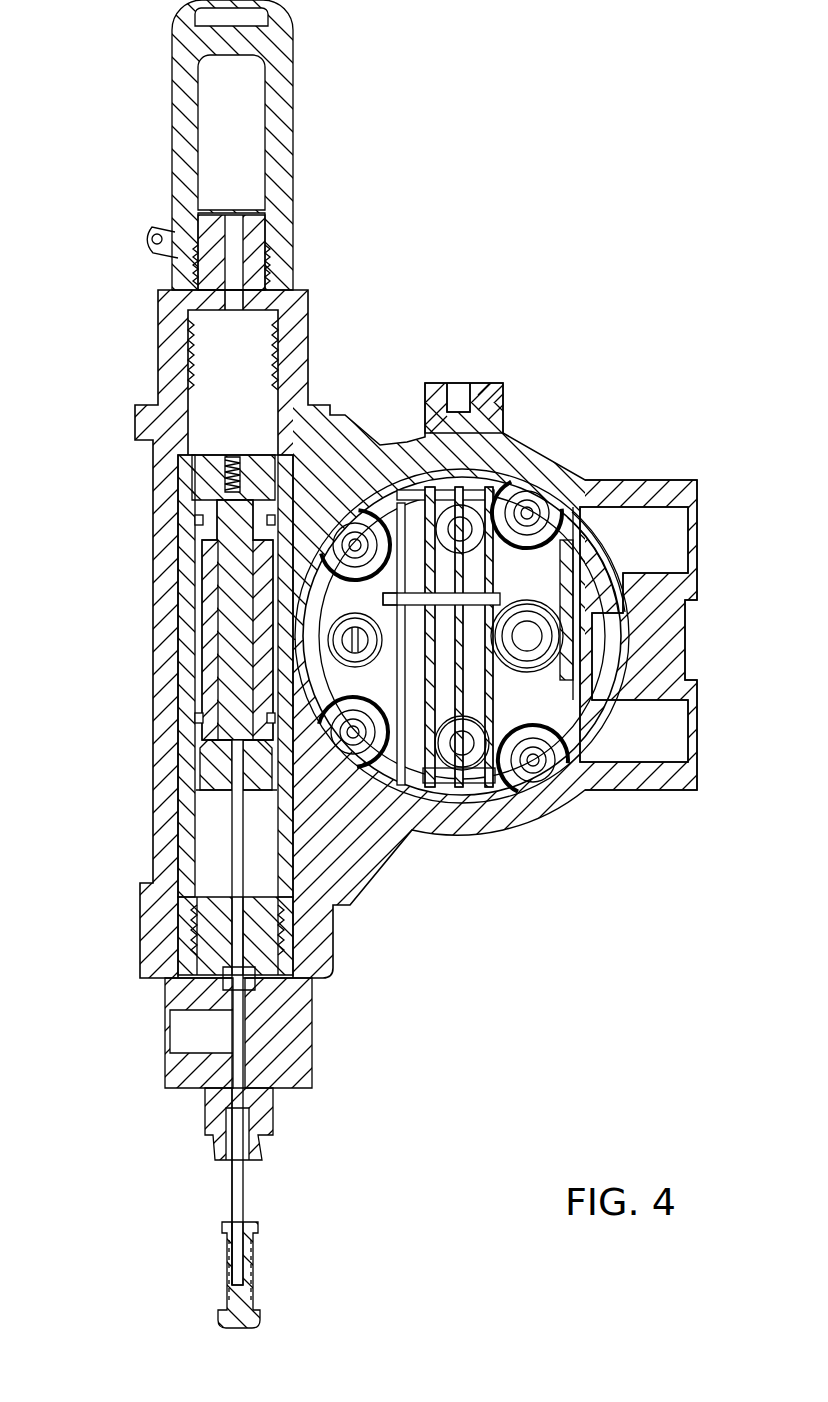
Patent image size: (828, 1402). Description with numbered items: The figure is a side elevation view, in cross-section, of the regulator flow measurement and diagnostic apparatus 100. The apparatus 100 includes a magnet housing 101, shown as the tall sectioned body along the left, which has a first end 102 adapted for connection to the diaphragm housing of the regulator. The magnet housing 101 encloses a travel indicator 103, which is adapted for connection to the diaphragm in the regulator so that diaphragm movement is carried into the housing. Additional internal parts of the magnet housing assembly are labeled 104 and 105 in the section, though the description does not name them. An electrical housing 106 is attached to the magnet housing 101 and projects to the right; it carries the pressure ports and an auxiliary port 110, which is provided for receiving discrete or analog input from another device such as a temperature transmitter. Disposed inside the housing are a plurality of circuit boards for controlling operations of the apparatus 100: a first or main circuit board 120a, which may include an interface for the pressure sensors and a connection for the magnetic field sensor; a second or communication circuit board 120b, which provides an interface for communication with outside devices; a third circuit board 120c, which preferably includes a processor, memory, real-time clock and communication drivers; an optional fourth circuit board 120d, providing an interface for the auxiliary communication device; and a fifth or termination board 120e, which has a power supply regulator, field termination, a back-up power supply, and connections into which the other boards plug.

The regulator flow measurement and diagnostic apparatus 100 is at (468, 368).
The magnet housing 101 is at (156, 732).
The first end 102 is at (213, 1120).
The travel indicator 103 is at (235, 845).
The piston 104 is at (225, 556).
The piston neck 105 is at (240, 607).
The electrical housing 106 is at (622, 786).
The auxiliary port 110 is at (500, 398).
The first (main) circuit board 120a is at (388, 778).
The second (communication) circuit board 120b is at (426, 802).
The third (main) circuit board 120c is at (455, 688).
The fourth circuit board 120d is at (548, 768).
The fifth (termination) board 120e is at (580, 473).